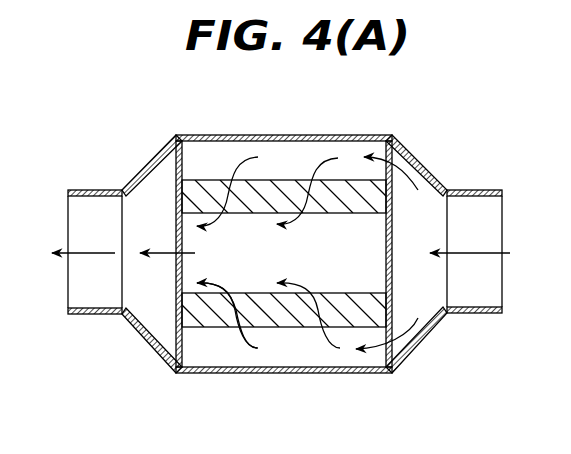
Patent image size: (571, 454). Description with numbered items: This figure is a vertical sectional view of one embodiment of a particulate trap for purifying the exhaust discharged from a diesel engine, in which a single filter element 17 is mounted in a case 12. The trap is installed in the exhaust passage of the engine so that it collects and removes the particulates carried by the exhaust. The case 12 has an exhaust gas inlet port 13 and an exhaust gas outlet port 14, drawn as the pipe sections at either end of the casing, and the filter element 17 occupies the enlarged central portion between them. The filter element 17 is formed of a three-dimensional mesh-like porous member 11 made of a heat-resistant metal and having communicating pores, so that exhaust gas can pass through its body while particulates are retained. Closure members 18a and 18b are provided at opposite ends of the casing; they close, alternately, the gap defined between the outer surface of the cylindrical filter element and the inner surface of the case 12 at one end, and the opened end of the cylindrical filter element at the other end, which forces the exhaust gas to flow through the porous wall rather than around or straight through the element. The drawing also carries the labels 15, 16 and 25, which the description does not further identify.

The three-dimensional mesh-like porous member 11 is at (211, 316).
The case 12 is at (411, 139).
The exhaust gas inlet port 13 is at (477, 282).
The exhaust gas outlet port 14 is at (96, 288).
The exhaust gas outflow 15 is at (491, 253).
The exhaust gas inflow 16 is at (65, 255).
The filter element 17 is at (199, 174).
The closure member 18a is at (176, 170).
The closure member 18b is at (399, 222).
The lower chamber 25 is at (403, 276).